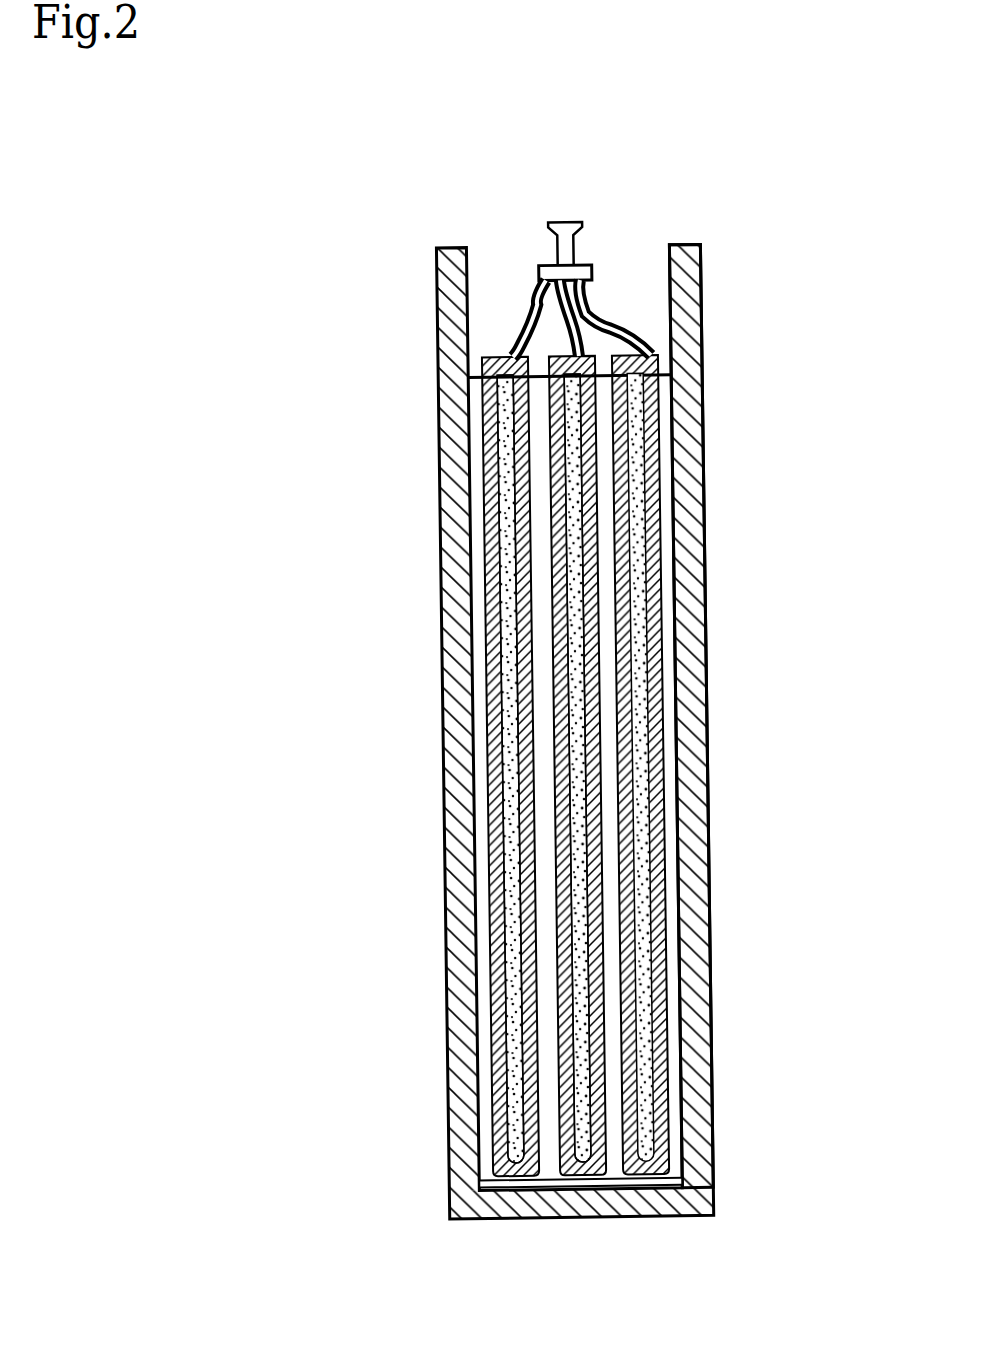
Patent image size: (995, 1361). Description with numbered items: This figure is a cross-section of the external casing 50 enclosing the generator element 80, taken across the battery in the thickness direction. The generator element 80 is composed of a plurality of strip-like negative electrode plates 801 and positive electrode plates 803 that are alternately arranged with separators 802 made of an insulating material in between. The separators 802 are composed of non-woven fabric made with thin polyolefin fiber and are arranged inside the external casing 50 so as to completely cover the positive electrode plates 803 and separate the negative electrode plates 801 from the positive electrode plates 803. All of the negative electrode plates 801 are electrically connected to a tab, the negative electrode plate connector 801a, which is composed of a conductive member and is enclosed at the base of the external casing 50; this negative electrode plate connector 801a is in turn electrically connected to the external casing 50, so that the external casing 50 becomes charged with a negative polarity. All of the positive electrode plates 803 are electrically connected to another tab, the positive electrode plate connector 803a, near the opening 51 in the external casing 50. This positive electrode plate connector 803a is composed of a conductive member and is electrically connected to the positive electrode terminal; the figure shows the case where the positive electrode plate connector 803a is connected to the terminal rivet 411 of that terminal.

The external casing 50 is at (441, 580).
The opening 51 is at (687, 243).
The generator element 80 is at (510, 268).
The terminal rivet 411 is at (606, 236).
The negative electrode plate 801 is at (670, 1143).
The negative electrode plate connector 801a is at (683, 1182).
The separator 802 is at (670, 1108).
The positive electrode plate 803 is at (667, 1047).
The positive electrode plate connector 803a is at (627, 330).